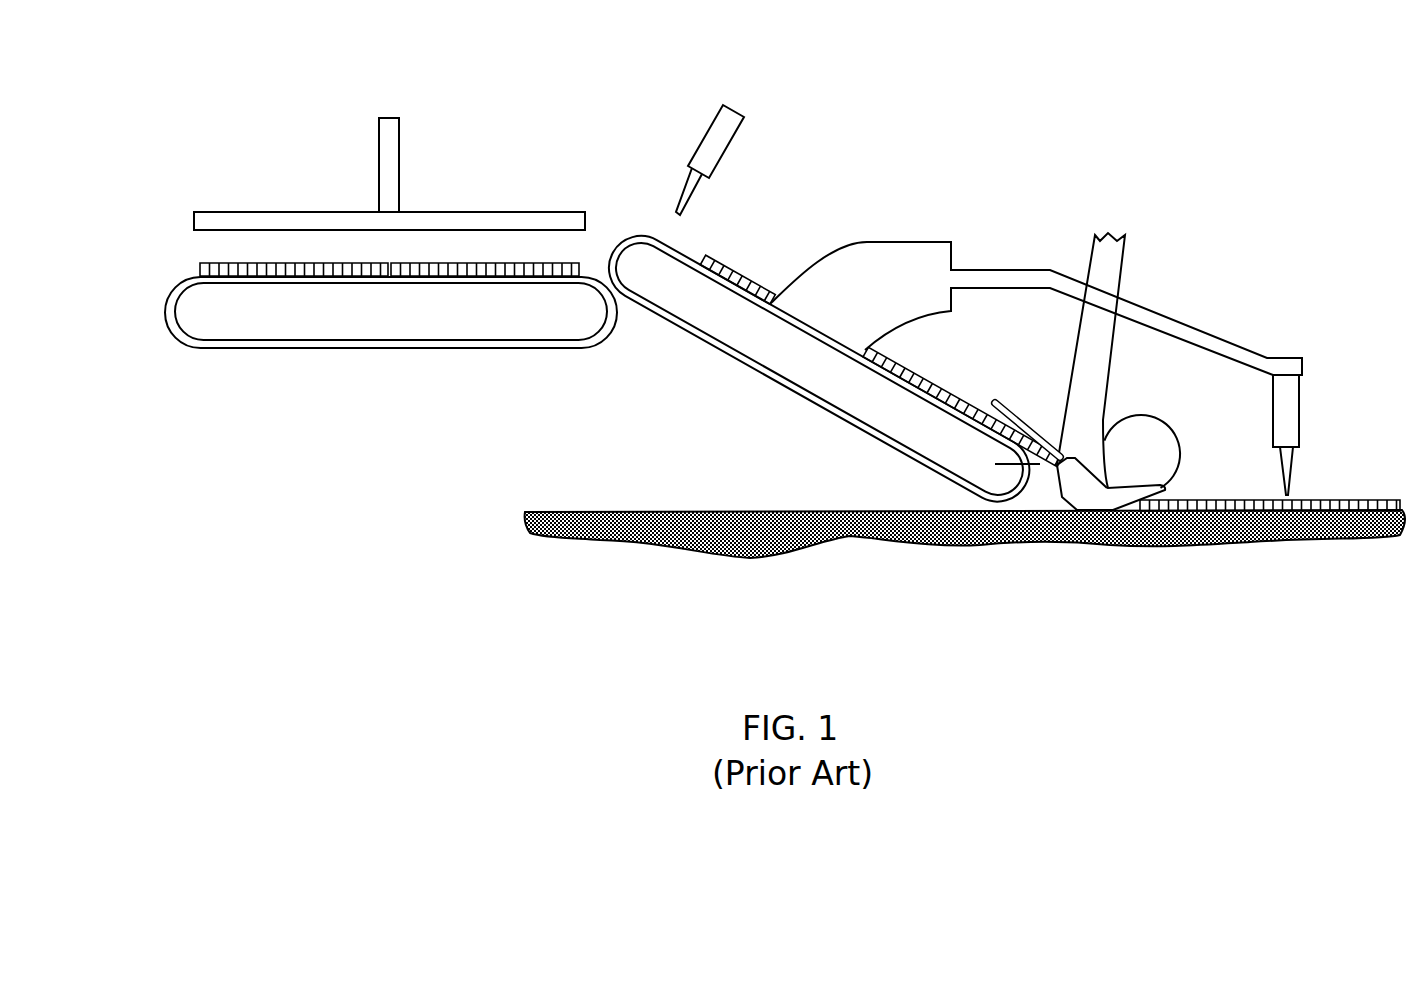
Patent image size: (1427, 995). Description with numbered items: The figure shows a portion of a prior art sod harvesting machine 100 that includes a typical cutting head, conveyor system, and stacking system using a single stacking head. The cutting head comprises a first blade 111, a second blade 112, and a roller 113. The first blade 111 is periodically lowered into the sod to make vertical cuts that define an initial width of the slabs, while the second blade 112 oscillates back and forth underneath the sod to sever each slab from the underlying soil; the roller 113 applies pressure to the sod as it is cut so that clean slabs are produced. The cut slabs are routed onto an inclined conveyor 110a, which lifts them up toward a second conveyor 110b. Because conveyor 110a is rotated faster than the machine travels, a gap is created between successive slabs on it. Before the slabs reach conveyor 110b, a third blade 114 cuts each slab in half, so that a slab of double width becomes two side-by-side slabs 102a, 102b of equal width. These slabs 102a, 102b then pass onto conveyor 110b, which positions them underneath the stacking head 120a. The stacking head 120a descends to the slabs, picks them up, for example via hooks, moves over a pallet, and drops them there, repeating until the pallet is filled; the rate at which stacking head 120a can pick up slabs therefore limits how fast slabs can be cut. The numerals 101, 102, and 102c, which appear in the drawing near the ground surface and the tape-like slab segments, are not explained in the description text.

The sod harvesting machine 100 is at (813, 40).
The substrate 101 is at (527, 530).
The applied adhesive tape 102 is at (1337, 537).
The slab 102a is at (200, 263).
The slab 102b is at (562, 262).
The tape segment on inclined belt 102c is at (742, 273).
The conveyor 110a is at (700, 335).
The conveyor 110b is at (240, 347).
The first blade 111 is at (1293, 480).
The second blade 112 is at (1063, 540).
The roller 113 is at (1172, 430).
The third blade 114 is at (700, 190).
The stacking head 120a is at (379, 160).